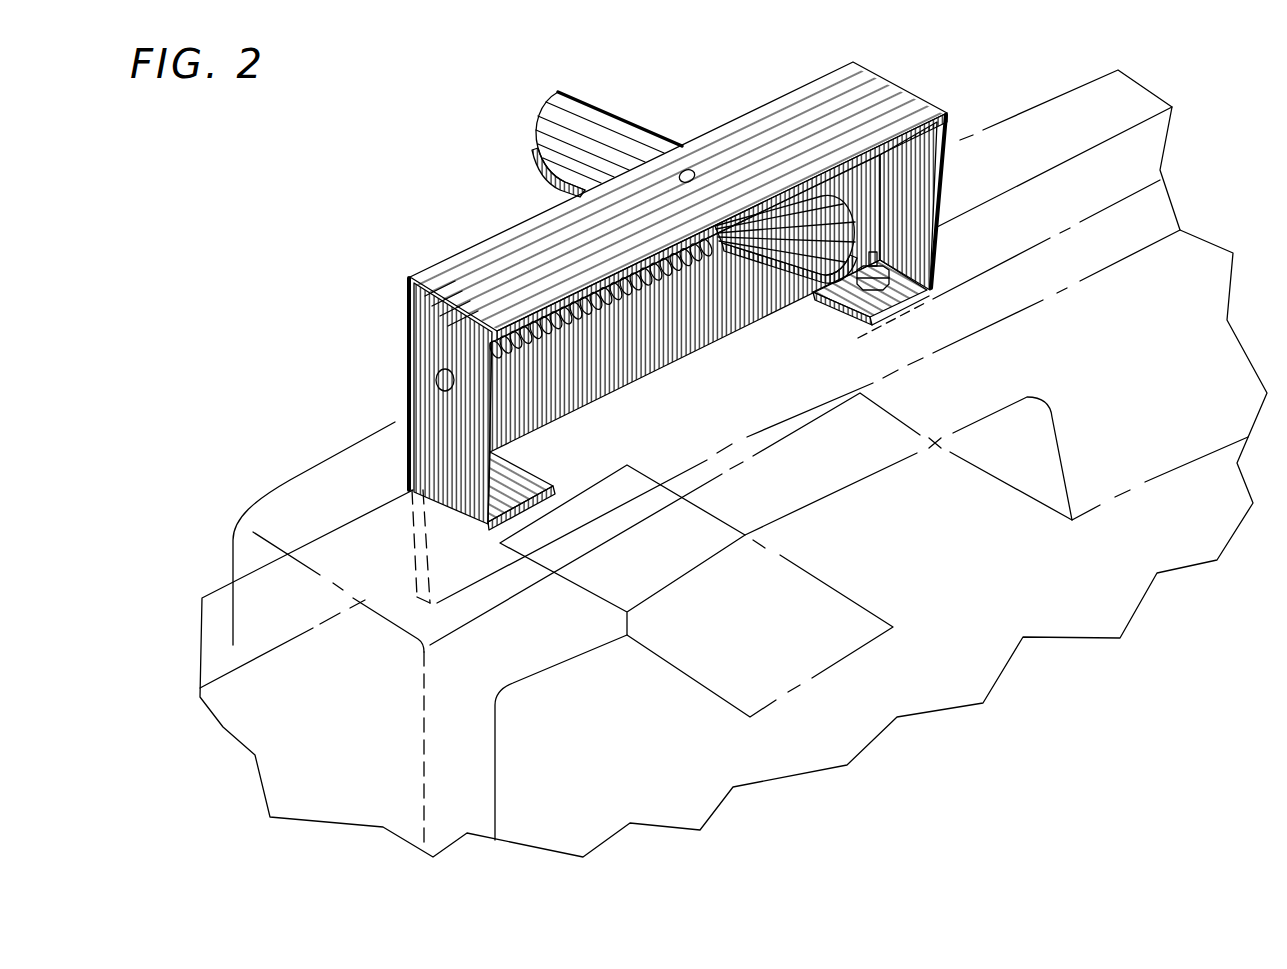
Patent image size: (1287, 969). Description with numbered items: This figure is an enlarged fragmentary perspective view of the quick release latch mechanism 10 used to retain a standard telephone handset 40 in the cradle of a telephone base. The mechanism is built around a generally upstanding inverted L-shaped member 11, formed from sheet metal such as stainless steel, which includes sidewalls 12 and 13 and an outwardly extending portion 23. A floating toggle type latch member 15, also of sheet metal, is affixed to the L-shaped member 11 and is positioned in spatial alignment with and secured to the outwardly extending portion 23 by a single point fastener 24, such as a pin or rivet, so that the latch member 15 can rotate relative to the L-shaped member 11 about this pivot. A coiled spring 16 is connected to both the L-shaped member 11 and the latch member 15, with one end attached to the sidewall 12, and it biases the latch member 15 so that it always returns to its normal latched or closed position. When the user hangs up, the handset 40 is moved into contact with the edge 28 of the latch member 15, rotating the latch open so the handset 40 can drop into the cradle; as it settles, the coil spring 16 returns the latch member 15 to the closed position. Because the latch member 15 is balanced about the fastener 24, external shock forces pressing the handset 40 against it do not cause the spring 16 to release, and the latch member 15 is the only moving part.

The quick release latch mechanism 10 is at (325, 201).
The inverted L-shaped member 11 is at (910, 97).
The sidewall 12 is at (424, 373).
The sidewall 13 is at (906, 196).
The floating toggle type latch member 15 is at (540, 137).
The coiled spring 16 is at (622, 310).
The outwardly extending portion 23 is at (822, 92).
The single point fastener 24 is at (706, 166).
The edge 28 is at (772, 268).
The standard telephone handset 40 is at (1178, 303).